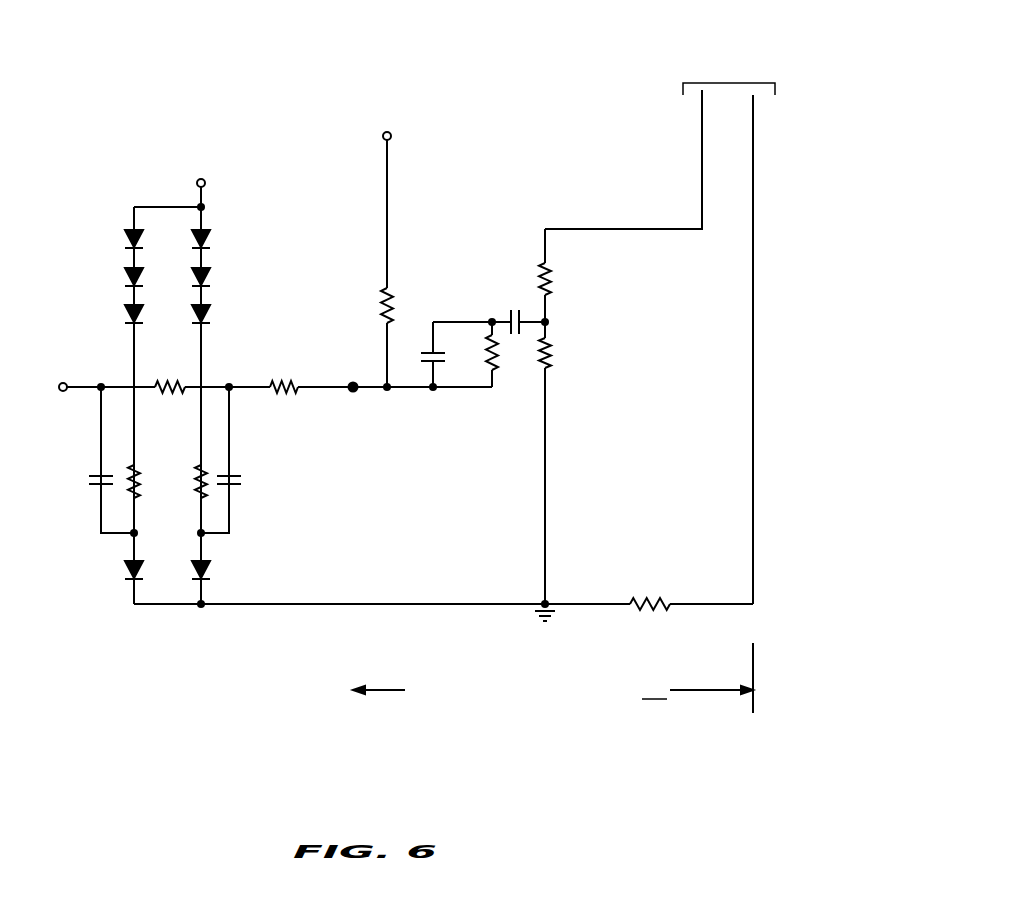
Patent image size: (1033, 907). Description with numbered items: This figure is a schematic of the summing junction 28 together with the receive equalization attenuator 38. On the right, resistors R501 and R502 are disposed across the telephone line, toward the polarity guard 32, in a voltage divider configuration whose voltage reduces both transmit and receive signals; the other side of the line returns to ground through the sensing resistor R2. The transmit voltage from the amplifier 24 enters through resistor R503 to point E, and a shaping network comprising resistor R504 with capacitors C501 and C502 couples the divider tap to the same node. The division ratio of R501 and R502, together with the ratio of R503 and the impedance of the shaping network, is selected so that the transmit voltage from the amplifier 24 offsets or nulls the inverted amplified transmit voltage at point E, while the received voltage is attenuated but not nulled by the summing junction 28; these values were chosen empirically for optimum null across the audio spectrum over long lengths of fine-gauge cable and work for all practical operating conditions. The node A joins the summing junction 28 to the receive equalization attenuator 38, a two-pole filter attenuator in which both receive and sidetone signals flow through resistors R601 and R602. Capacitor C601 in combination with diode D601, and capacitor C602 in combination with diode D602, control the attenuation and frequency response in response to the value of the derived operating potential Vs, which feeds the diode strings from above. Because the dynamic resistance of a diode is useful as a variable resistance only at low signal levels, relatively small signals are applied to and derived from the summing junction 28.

The amplifier 24 is at (386, 220).
The summing junction 28 is at (514, 483).
The polarity guard 32 is at (660, 304).
The receive equalization attenuator 38 is at (353, 690).
The sensing resistor R2 is at (657, 572).
The resistor R501 is at (560, 285).
The resistor R502 is at (554, 362).
The resistor R503 is at (381, 299).
The resistor R504 is at (497, 372).
The capacitor C501 is at (455, 351).
The capacitor C502 is at (515, 304).
The resistor R601 is at (302, 360).
The resistor R602 is at (181, 380).
The capacitor C601 is at (243, 480).
The capacitor C602 is at (87, 486).
The diode D601 is at (211, 570).
The diode D602 is at (126, 573).
The node A is at (356, 392).
The point E is at (387, 392).
The operating potential Vs is at (201, 171).